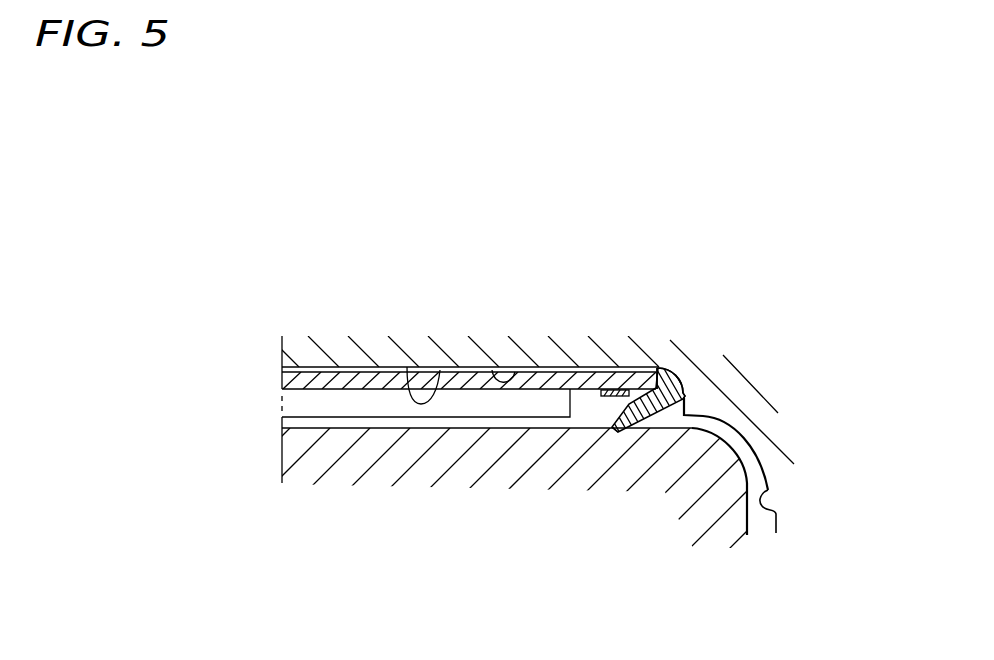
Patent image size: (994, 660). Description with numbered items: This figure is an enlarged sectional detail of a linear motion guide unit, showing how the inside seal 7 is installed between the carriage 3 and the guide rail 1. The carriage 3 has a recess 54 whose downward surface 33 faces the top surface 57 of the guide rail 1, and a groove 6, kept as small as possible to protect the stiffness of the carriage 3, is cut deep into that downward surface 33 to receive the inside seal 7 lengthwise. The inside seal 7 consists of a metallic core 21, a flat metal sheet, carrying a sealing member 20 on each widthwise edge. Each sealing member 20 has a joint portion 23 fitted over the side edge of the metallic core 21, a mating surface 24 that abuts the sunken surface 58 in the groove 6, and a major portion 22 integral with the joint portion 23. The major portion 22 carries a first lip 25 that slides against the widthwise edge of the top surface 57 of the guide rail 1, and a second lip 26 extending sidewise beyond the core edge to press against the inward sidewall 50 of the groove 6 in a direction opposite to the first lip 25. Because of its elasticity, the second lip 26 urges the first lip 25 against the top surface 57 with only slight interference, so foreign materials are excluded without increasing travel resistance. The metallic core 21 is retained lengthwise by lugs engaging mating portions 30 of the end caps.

The guide rail 1 is at (527, 455).
The carriage 3 is at (695, 380).
The groove 6 is at (493, 368).
The inside seal 7 is at (620, 366).
The sealing member 20 is at (700, 428).
The metallic core 21 is at (540, 380).
The major portion 22 is at (661, 363).
The joint portion 23 is at (604, 399).
The mating surface 24 is at (656, 367).
The first lip 25 is at (617, 432).
The second lip 26 is at (684, 388).
The mating portion 30 is at (386, 403).
The downward surface 33 is at (407, 367).
The sidewall 50 is at (667, 428).
The recess 54 is at (776, 511).
The top surface 57 is at (346, 429).
The sunken surface 58 is at (413, 324).